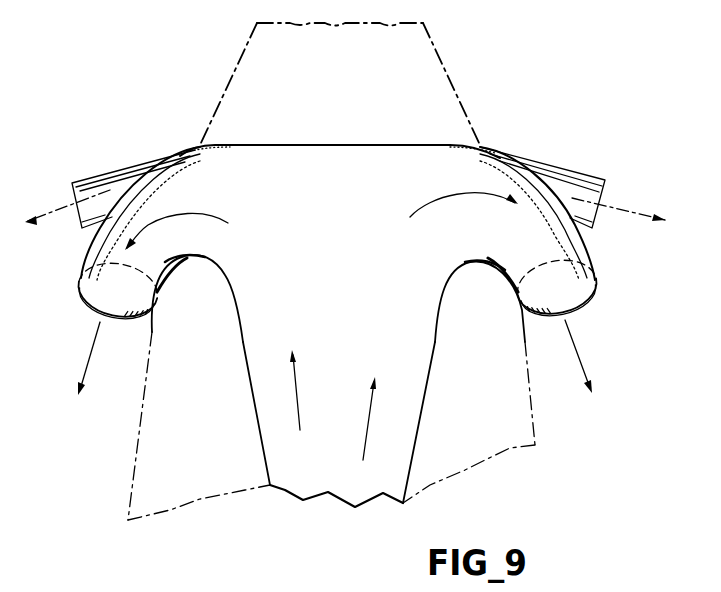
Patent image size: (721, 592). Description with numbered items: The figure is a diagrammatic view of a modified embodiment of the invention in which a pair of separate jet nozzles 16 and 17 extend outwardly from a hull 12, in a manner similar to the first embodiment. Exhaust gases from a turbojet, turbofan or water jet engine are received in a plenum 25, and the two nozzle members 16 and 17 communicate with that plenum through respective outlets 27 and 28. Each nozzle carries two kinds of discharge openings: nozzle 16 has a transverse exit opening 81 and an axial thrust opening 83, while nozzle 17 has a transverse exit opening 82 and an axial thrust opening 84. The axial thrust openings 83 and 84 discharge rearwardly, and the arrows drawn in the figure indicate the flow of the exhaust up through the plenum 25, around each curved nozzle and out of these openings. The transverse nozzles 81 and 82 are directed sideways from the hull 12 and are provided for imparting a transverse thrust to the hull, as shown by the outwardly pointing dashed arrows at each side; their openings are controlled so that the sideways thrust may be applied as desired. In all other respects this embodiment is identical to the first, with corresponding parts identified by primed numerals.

The hull 12 is at (460, 81).
The jet nozzle 16 is at (77, 265).
The jet nozzle 17 is at (602, 260).
The plenum 25 is at (402, 448).
The outlet 27 is at (208, 258).
The outlet 28 is at (478, 238).
The transverse exit opening 81 is at (72, 196).
The transverse exit opening 82 is at (606, 185).
The axial thrust opening 83 is at (125, 318).
The axial thrust opening 84 is at (588, 293).